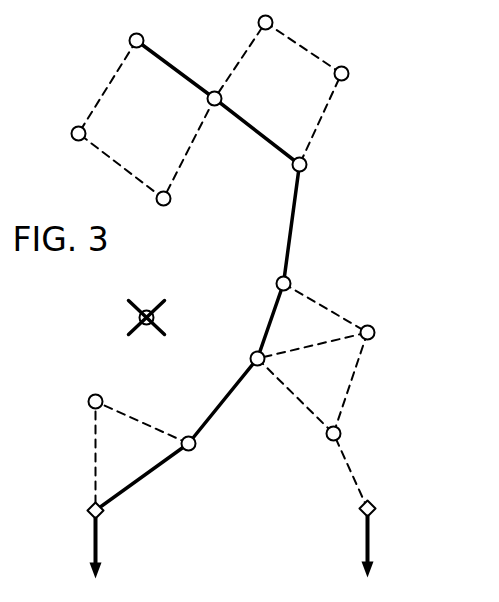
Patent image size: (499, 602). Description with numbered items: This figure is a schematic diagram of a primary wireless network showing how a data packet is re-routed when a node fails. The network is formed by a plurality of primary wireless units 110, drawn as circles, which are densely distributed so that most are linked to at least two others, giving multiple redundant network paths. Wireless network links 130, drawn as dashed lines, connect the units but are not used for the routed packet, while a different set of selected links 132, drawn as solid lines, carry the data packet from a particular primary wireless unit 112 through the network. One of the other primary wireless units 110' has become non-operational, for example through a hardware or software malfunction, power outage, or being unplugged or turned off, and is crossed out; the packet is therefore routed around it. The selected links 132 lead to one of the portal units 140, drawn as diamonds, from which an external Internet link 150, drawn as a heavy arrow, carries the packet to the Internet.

The primary wireless unit 110 is at (234, 229).
The non-operational primary wireless unit 110' is at (105, 313).
The primary wireless unit 112 is at (130, 36).
The wireless network link 130 is at (130, 172).
The selected network link 132 is at (262, 142).
The portal unit 140 is at (88, 505).
The external link 150 is at (92, 545).